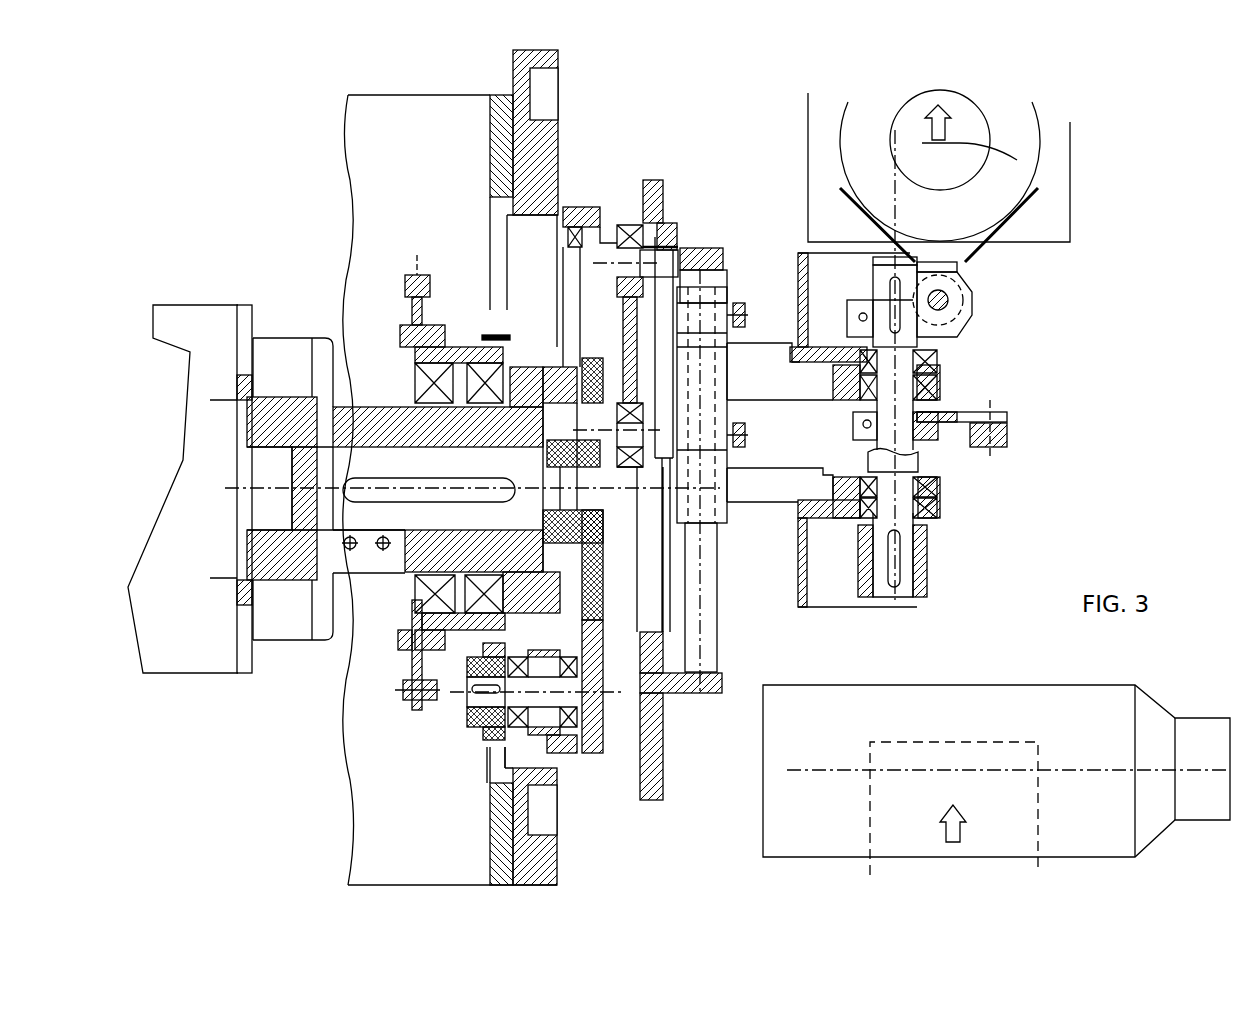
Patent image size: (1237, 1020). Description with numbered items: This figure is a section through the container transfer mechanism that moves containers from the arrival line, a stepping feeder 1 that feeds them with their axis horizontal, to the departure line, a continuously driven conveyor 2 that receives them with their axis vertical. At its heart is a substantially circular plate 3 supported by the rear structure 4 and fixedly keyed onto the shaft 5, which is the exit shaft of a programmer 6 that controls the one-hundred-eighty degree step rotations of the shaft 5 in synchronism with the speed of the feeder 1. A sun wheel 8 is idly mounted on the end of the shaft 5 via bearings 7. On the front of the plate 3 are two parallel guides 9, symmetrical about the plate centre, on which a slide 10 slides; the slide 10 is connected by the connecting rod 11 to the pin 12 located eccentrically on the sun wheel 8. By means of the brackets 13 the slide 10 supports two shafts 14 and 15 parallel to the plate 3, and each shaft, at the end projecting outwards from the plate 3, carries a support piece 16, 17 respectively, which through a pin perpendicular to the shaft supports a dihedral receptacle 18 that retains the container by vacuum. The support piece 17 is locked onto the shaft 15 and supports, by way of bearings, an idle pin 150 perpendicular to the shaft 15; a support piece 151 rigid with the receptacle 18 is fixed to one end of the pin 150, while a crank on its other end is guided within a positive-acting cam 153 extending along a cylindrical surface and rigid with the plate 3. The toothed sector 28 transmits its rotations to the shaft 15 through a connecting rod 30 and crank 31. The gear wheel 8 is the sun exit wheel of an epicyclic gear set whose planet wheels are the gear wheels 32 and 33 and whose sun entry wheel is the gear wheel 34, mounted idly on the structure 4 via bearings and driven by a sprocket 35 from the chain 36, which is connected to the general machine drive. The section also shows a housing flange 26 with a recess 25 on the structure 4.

The stepping feeder 1 is at (1038, 868).
The conveyor 2 is at (1072, 157).
The circular plate 3 is at (665, 182).
The rear structure 4 is at (372, 400).
The shaft 5 is at (367, 520).
The programmer 6 is at (190, 458).
The bearings 7 is at (550, 440).
The sun wheel 8 is at (607, 583).
The parallel guides 9 is at (703, 562).
The slide 10 is at (723, 508).
The connecting rod 11 is at (627, 235).
The pin 12 is at (640, 417).
The brackets 13 is at (776, 345).
The shaft 14 is at (927, 537).
The shaft 15 is at (940, 343).
The support piece 16 is at (927, 567).
The support piece 17 is at (970, 287).
The dihedral receptacle 18 is at (1020, 217).
The flange recess 25 is at (553, 92).
The housing flange 26 is at (560, 56).
The toothed sector 28 is at (952, 437).
The connecting rod 30 is at (1007, 435).
The crank 31 is at (980, 402).
The gear wheel 32 is at (663, 728).
The gear wheel 33 is at (487, 740).
The gear wheel 34 is at (492, 335).
The sprocket 35 is at (405, 668).
The chain 36 is at (427, 700).
The idle pin 150 is at (948, 310).
The support piece 151 is at (900, 257).
The positive-acting cam 153 is at (800, 250).